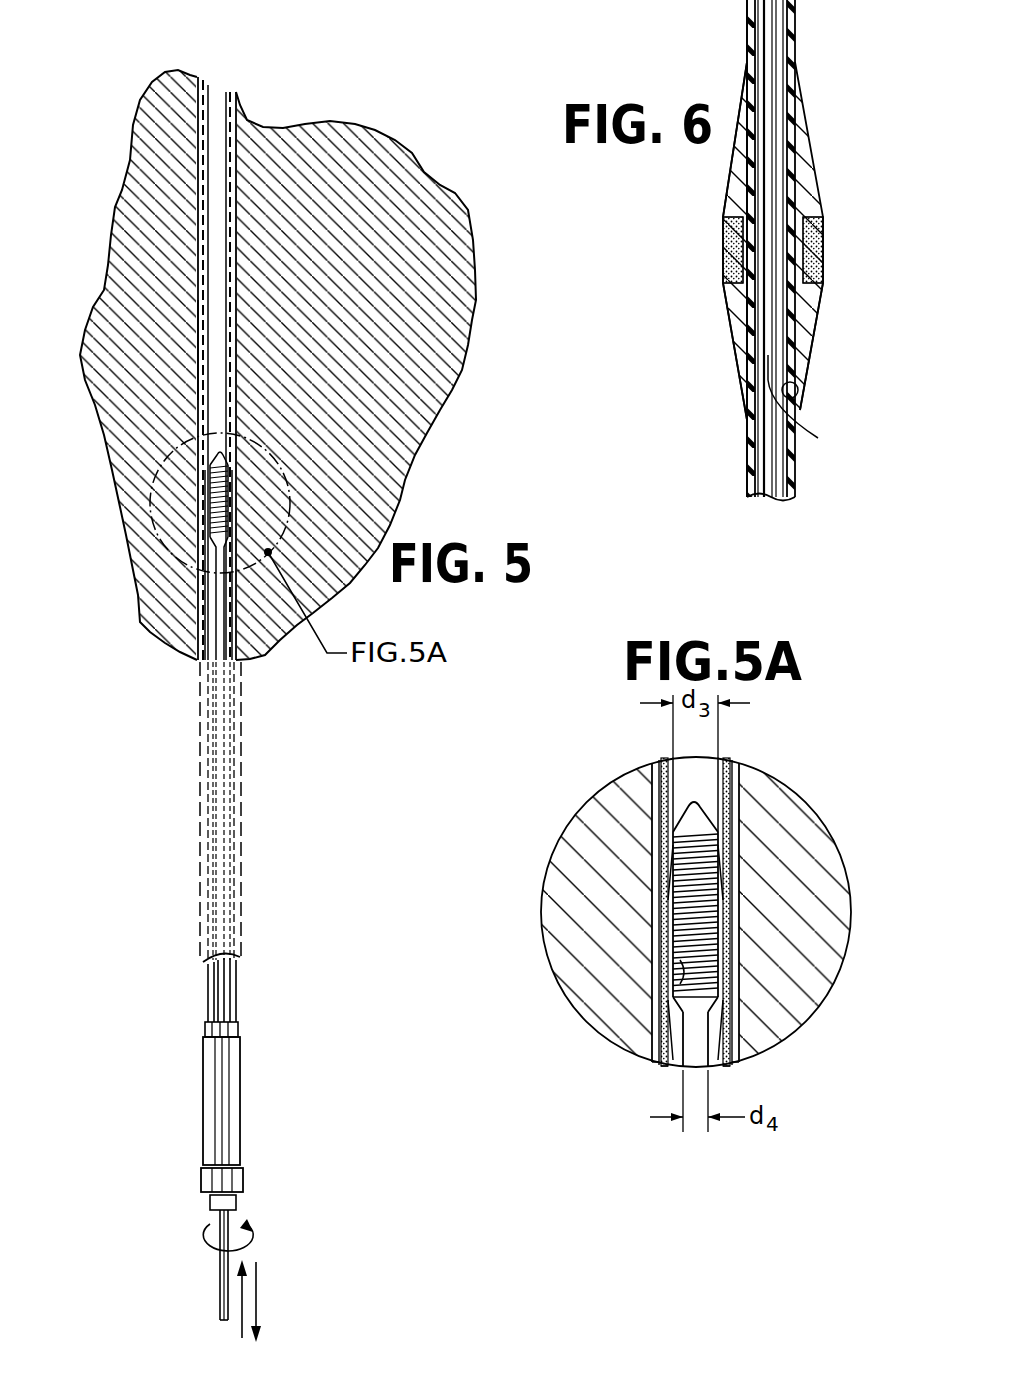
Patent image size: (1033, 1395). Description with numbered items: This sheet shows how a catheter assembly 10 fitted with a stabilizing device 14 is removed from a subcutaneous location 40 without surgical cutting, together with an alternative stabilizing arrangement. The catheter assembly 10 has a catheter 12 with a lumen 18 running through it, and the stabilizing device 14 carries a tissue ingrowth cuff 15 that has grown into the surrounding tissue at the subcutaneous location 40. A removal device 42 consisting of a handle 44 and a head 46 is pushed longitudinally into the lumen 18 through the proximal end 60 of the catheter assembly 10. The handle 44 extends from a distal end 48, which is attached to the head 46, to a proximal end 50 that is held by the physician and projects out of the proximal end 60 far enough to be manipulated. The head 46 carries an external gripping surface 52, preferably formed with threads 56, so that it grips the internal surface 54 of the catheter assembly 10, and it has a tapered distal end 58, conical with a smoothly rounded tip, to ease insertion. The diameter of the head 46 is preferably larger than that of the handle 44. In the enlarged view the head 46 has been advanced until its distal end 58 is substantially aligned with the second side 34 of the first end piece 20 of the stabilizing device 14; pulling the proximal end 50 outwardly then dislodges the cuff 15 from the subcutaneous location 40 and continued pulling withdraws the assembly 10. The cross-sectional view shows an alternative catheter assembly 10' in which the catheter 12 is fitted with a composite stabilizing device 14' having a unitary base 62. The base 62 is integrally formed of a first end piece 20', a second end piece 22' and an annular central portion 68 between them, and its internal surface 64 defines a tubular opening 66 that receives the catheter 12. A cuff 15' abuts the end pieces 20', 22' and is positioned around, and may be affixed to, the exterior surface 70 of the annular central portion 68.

In FIG. 5, the catheter assembly 10 is at (123, 335).
In FIG. 6, the catheter assembly 10' is at (677, 248).
In FIG. 6, the catheter 12 is at (797, 44).
In FIG. 5, the stabilizing device 14 is at (152, 563).
In FIG. 5A, the stabilizing device 14 is at (762, 1025).
In FIG. 6, the composite catheter stabilizing device 14' is at (795, 241).
In FIG. 5A, the cuff 15 is at (773, 990).
In FIG. 6, the cuff 15' is at (746, 250).
In FIG. 5, the lumen 18 is at (197, 78).
In FIG. 5A, the first end piece 20 is at (618, 912).
In FIG. 6, the first end piece 20' is at (708, 139).
In FIG. 6, the second end piece 22' is at (711, 351).
In FIG. 5A, the second side 34 is at (673, 855).
In FIG. 5, the subcutaneous location 40 is at (240, 140).
In FIG. 5, the device 42 is at (215, 1266).
In FIG. 5A, the device 42 is at (666, 1061).
In FIG. 5, the handle 44 is at (222, 1291).
In FIG. 5, the head 46 is at (208, 527).
In FIG. 5A, the head 46 is at (700, 838).
In FIG. 5, the distal end 48 is at (226, 570).
In FIG. 5A, the distal end 48 is at (736, 1016).
In FIG. 5, the proximal end 50 is at (222, 1320).
In FIG. 5A, the external gripping surface 52 is at (666, 828).
In FIG. 5A, the internal surface 54 is at (572, 1012).
In FIG. 5A, the threads 56 is at (733, 870).
In FIG. 5, the tapered distal end 58 is at (203, 450).
In FIG. 5A, the tapered distal end 58 is at (697, 803).
In FIG. 5, the proximal end 60 is at (208, 1233).
In FIG. 6, the unitary base 62 is at (812, 320).
In FIG. 6, the internal surface 64 is at (798, 394).
In FIG. 6, the tubular opening 66 is at (808, 404).
In FIG. 6, the annular central portion 68 is at (818, 270).
In FIG. 6, the exterior surface 70 is at (730, 266).